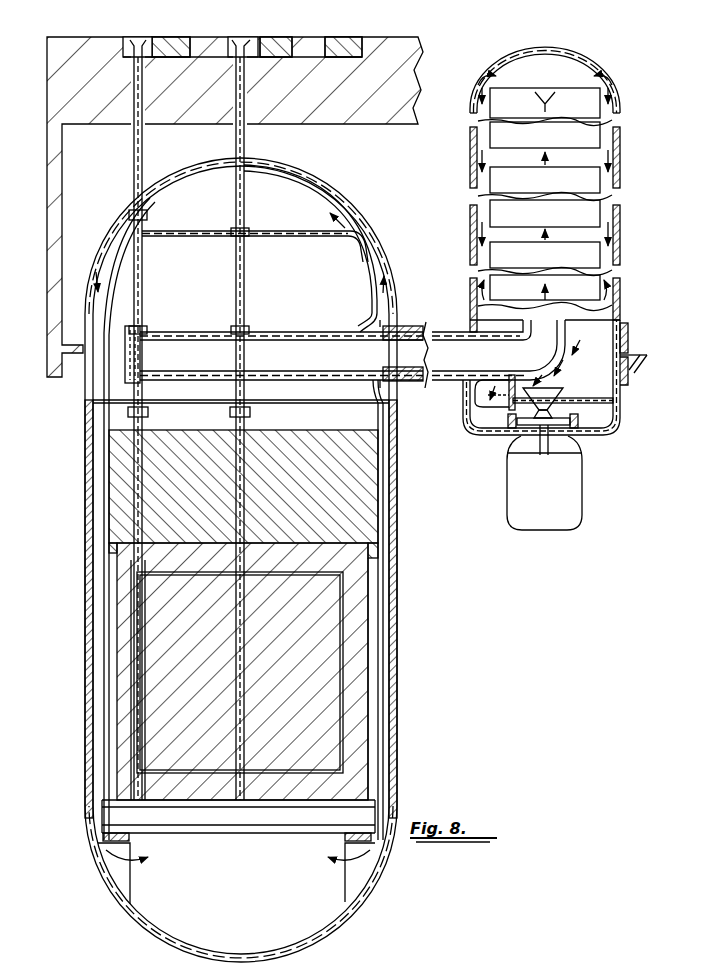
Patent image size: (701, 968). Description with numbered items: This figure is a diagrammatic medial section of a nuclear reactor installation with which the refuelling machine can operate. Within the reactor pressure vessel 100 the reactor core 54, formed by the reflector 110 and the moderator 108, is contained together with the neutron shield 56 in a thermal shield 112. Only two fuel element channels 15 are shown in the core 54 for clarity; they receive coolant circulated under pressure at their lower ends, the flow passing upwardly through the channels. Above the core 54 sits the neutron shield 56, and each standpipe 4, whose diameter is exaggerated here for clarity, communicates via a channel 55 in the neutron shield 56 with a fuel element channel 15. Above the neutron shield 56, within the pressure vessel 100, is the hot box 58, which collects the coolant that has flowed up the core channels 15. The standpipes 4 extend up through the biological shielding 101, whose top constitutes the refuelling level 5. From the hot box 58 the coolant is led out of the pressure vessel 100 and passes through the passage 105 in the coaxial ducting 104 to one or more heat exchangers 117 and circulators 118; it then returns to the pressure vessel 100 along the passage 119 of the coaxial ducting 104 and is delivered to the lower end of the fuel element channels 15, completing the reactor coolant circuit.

The refuelling level 5 is at (290, 36).
The biological shielding 101 is at (375, 65).
The heat exchangers 117 is at (478, 72).
The standpipe 4 is at (143, 266).
The hot box 58 is at (289, 348).
The coaxial ducting 104 is at (411, 327).
The passage 119 is at (407, 342).
The passage 105 is at (421, 362).
The circulators 118 is at (574, 434).
The channel 55 is at (136, 473).
The neutron shield 56 is at (318, 452).
The reactor pressure vessel 100 is at (397, 472).
The thermal shield 112 is at (100, 523).
The reflector 110 is at (362, 587).
The fuel element channel 15 is at (133, 612).
The reactor core 54 is at (378, 625).
The moderator 108 is at (328, 669).